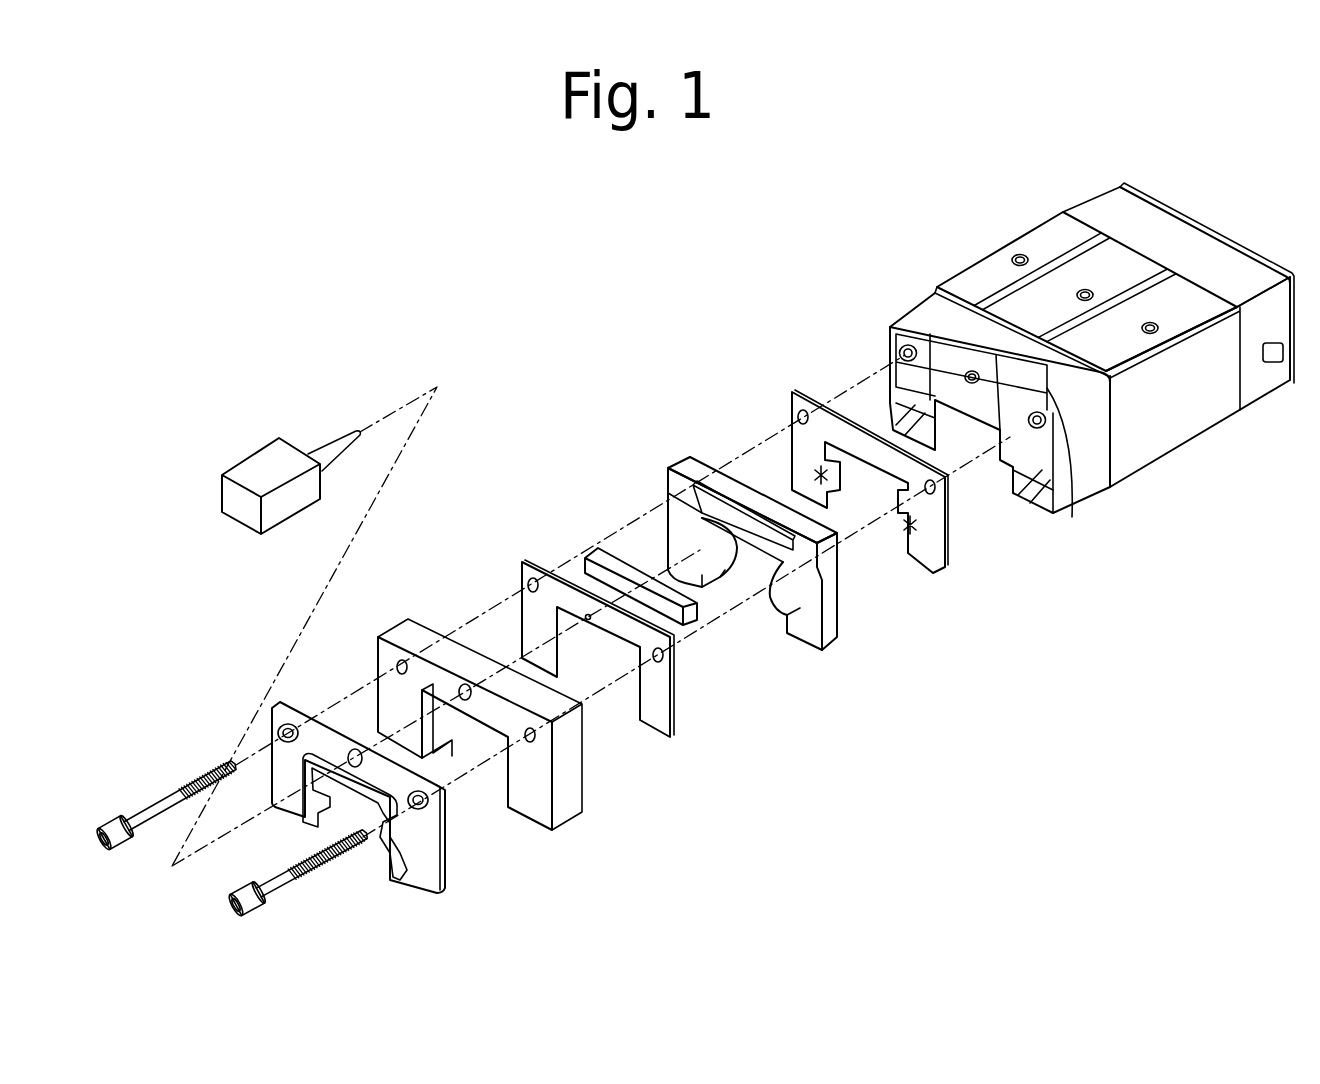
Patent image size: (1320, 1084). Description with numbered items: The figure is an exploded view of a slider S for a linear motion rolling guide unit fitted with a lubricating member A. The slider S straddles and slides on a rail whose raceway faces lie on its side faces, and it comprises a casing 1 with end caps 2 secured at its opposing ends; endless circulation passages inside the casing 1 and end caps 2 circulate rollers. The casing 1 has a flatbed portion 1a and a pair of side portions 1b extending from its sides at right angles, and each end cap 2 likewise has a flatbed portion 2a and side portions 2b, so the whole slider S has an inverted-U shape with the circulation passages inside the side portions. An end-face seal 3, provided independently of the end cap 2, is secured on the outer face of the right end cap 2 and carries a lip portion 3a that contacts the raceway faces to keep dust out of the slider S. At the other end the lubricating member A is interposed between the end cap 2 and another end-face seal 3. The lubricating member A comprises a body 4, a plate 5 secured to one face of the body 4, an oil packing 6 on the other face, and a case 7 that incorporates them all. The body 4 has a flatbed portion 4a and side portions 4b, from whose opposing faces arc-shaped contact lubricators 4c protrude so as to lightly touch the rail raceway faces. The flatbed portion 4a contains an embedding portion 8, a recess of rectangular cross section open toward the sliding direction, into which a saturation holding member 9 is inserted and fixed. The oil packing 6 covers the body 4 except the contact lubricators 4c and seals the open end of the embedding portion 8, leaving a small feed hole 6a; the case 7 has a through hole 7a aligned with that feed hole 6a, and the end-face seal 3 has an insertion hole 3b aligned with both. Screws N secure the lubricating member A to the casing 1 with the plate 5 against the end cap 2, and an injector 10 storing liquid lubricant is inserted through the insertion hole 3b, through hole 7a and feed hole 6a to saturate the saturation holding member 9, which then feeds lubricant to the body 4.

The slider S is at (1100, 160).
The casing 1 is at (1000, 250).
The flatbed portion 1a is at (1140, 263).
The side portions 1b is at (940, 286).
The end cap 2 is at (907, 313).
The flatbed portion 2a is at (1250, 267).
The side portions 2b is at (887, 405).
The end-face seal 3 is at (286, 702).
The lip portion 3a is at (376, 822).
The insertion hole 3b is at (356, 748).
The body 4 is at (749, 537).
The flatbed portion 4a is at (755, 505).
The side portions 4b is at (677, 535).
The contact lubricators 4c is at (773, 585).
The plate 5 is at (790, 392).
The oil packing 6 is at (524, 560).
The feed hole 6a is at (588, 620).
The case 7 is at (408, 612).
The through hole 7a is at (466, 702).
The embedding portion 8 is at (715, 507).
The saturation holding member 9 is at (598, 548).
The injector 10 is at (283, 437).
The screws N is at (117, 824).
The lubricating member A is at (793, 347).